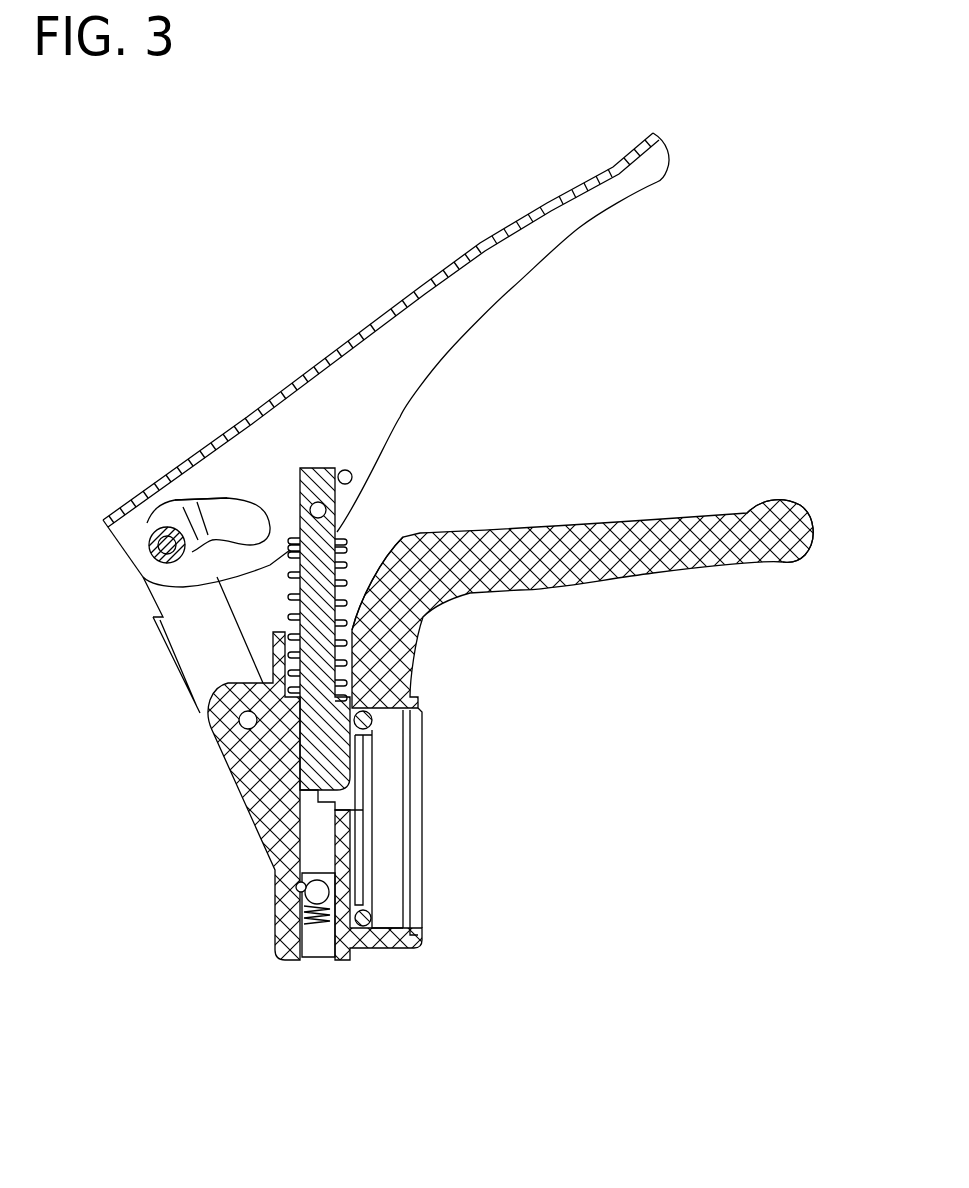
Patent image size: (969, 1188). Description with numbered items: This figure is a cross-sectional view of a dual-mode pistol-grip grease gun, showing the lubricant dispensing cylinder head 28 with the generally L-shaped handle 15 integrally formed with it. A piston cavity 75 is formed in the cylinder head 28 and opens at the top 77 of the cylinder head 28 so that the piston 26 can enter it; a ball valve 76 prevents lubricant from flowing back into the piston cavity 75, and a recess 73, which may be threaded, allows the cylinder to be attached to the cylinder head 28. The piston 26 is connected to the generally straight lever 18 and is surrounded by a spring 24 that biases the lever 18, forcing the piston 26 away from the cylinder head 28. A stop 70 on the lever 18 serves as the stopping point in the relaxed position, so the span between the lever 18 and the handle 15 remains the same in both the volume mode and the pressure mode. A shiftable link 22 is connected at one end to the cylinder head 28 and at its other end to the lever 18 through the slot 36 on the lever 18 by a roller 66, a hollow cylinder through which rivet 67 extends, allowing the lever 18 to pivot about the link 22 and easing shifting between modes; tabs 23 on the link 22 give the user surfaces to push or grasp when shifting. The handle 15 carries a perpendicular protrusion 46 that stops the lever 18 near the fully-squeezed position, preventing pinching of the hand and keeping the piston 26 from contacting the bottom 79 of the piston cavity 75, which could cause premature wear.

The lever 18 is at (435, 318).
The slot 36 is at (240, 520).
The tabs 23 is at (207, 500).
The rivet 67 is at (147, 540).
The roller 66 is at (143, 577).
The shiftable link 22 is at (207, 657).
The spring 24 is at (337, 553).
The stop 70 is at (352, 477).
The piston 26 is at (317, 578).
The handle 15 is at (583, 547).
The protrusion 46 is at (773, 507).
The top of the cylinder head 77 is at (372, 607).
The piston cavity 75 is at (317, 830).
The cylinder head 28 is at (380, 947).
The recess 73 is at (380, 716).
The ball valve 76 is at (305, 892).
The bottom of the piston cavity 79 is at (298, 884).